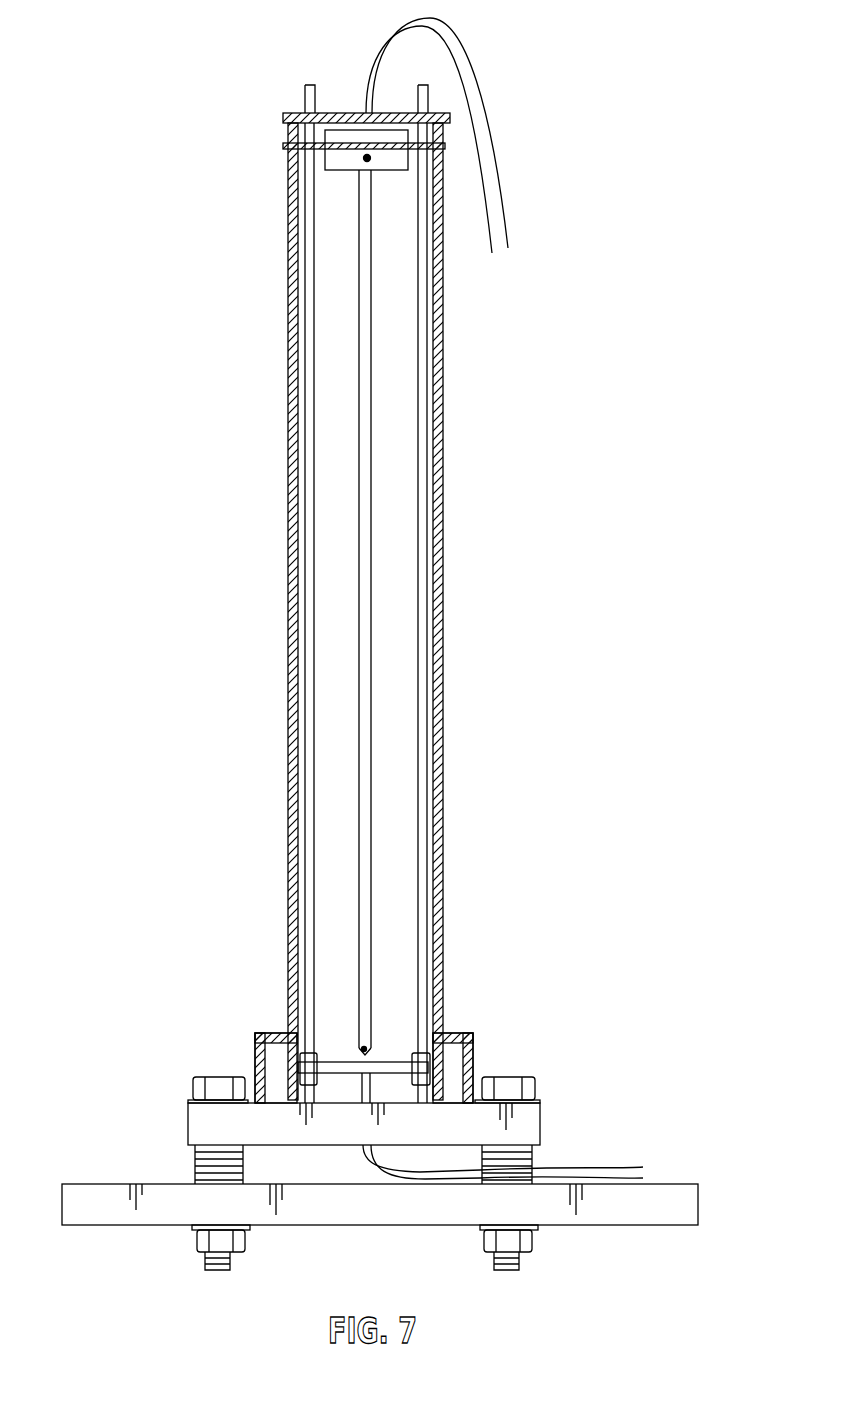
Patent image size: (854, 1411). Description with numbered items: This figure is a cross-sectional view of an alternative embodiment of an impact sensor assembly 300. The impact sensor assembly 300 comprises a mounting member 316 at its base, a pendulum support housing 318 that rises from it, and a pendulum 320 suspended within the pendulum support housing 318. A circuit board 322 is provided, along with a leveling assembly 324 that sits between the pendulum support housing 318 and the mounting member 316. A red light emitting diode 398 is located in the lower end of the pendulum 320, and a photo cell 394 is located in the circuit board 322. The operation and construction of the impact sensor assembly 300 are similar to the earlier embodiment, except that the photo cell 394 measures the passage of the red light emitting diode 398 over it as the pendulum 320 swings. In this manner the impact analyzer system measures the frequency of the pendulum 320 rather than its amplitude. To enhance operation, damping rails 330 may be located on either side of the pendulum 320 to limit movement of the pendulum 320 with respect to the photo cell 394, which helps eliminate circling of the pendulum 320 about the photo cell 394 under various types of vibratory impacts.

The impact sensor assembly 300 is at (502, 510).
The mounting member 316 is at (667, 1193).
The pendulum support housing 318 is at (443, 312).
The pendulum 320 is at (365, 404).
The circuit board 322 is at (397, 1062).
The leveling assembly 324 is at (532, 1122).
The damping rails 330 is at (273, 1032).
The photo cell 394 is at (375, 1068).
The red light emitting diode 398 is at (363, 1045).